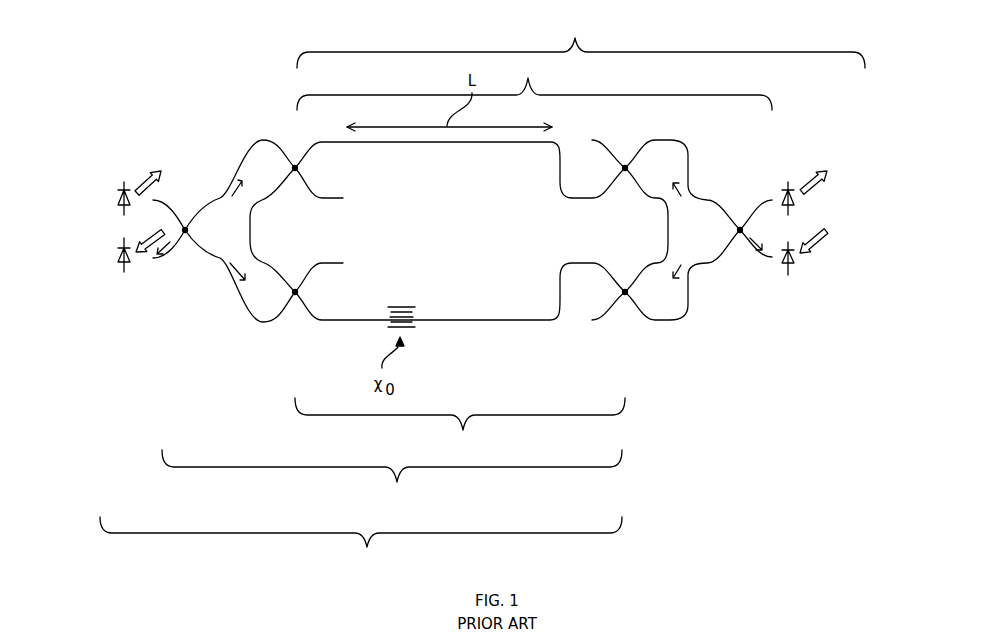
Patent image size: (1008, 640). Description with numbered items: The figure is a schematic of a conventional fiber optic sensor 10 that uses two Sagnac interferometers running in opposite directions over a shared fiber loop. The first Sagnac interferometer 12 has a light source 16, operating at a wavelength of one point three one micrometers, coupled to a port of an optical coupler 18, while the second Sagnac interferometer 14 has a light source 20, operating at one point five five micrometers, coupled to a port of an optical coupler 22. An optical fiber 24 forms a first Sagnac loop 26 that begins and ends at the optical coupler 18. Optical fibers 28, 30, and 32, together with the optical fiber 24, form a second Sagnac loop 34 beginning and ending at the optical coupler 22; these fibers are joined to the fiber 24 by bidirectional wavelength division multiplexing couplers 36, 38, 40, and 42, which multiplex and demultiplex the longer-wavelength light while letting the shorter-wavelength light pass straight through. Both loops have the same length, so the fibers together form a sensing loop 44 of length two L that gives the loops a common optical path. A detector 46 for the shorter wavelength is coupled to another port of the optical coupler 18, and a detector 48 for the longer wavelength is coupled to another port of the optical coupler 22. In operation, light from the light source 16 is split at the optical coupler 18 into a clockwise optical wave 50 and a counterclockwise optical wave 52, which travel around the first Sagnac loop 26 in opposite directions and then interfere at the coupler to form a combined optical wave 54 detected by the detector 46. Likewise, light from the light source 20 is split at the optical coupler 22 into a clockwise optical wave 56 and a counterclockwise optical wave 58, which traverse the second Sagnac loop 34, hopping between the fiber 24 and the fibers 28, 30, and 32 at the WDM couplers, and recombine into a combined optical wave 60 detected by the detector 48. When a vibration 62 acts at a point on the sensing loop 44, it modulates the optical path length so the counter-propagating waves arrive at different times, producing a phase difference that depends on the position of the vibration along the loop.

The fiber optic sensor 10 is at (227, 104).
The first Sagnac interferometer 12 is at (361, 543).
The second Sagnac interferometer 14 is at (581, 40).
The light source 16 is at (122, 190).
The optical coupler 18 is at (185, 228).
The light source 20 is at (790, 186).
The optical coupler 22 is at (740, 228).
The optical fiber 24 is at (263, 138).
The first Sagnac loop 26 is at (392, 478).
The optical fiber 28 is at (670, 139).
The optical fiber 30 is at (665, 321).
The optical fiber 32 is at (250, 228).
The second Sagnac loop 34 is at (534, 83).
The WDM coupler 36 is at (625, 166).
The WDM coupler 38 is at (625, 290).
The WDM coupler 40 is at (295, 166).
The WDM coupler 42 is at (295, 290).
The sensing loop 44 is at (460, 426).
The detector 46 is at (122, 250).
The detector 48 is at (790, 246).
The clockwise optical wave 50 is at (229, 212).
The counterclockwise optical wave 52 is at (228, 265).
The combined optical wave 54 is at (165, 250).
The clockwise optical wave 56 is at (676, 270).
The counterclockwise optical wave 58 is at (678, 195).
The combined optical wave 60 is at (760, 247).
The vibration 62 is at (417, 292).